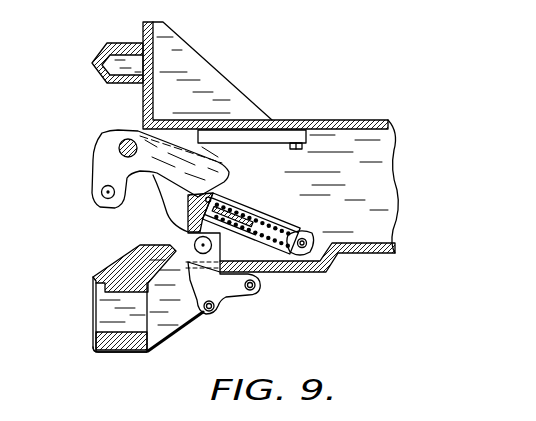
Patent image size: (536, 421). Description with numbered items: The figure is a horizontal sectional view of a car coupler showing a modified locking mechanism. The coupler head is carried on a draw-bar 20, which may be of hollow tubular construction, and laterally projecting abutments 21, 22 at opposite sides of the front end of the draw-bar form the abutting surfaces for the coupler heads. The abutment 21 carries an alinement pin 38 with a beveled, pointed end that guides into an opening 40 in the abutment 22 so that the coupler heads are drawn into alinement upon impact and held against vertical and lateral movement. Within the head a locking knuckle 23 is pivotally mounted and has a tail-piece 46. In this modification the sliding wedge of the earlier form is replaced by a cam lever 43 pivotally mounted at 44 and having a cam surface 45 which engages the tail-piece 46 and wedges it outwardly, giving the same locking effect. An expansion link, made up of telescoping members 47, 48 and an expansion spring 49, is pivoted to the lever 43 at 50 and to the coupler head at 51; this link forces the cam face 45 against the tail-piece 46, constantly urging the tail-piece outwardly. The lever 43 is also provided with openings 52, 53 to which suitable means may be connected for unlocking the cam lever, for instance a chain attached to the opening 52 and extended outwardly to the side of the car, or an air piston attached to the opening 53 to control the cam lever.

The draw-bar 20 is at (357, 133).
The abutment 21 is at (150, 98).
The abutment 22 is at (120, 352).
The locking knuckle 23 is at (102, 168).
The alinement pin 38 is at (110, 43).
The opening 40 is at (110, 313).
The cam lever 43 is at (201, 286).
The pivot 44 is at (203, 245).
The cam surface 45 is at (190, 200).
The tail-piece 46 is at (236, 191).
The telescoping member 47 is at (229, 213).
The telescoping member 48 is at (280, 243).
The expansion spring 49 is at (314, 264).
The pivot 50 is at (188, 213).
The pivot 51 is at (310, 248).
The opening 52 is at (257, 291).
The opening 53 is at (215, 308).